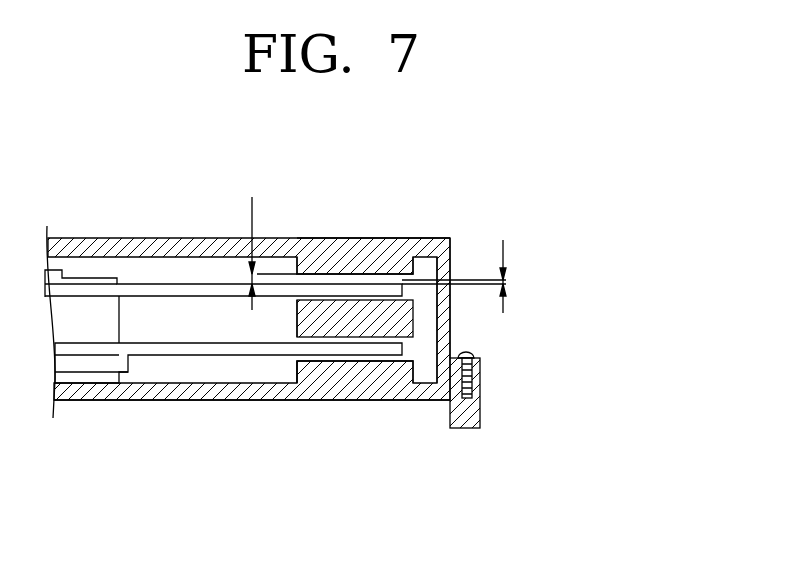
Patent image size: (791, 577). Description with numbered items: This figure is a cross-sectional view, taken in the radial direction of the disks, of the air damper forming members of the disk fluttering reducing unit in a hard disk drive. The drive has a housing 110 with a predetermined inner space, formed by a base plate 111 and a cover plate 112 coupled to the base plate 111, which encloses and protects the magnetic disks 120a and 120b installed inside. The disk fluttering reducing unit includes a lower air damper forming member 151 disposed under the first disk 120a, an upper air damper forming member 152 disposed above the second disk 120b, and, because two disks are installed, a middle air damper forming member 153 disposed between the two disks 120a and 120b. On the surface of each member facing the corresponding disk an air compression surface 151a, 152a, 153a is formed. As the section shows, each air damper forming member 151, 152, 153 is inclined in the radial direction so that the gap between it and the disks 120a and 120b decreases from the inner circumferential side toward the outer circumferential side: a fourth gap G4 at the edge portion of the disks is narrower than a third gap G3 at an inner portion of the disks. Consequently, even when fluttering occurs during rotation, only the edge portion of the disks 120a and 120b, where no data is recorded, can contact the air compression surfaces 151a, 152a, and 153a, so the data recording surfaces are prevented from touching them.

The housing 110 is at (337, 327).
The base plate 111 is at (477, 400).
The cover plate 112 is at (450, 338).
The first disk 120a is at (138, 343).
The second disk 120b is at (162, 290).
The lower air damper forming member 151 is at (350, 384).
The air compression surface 151a is at (327, 362).
The upper air damper forming member 152 is at (352, 250).
The air compression surface 152a is at (390, 264).
The middle air damper forming member 153 is at (388, 322).
The air compression surface 153a is at (297, 300).
The third gap G3 is at (236, 253).
The fourth gap G4 is at (454, 264).